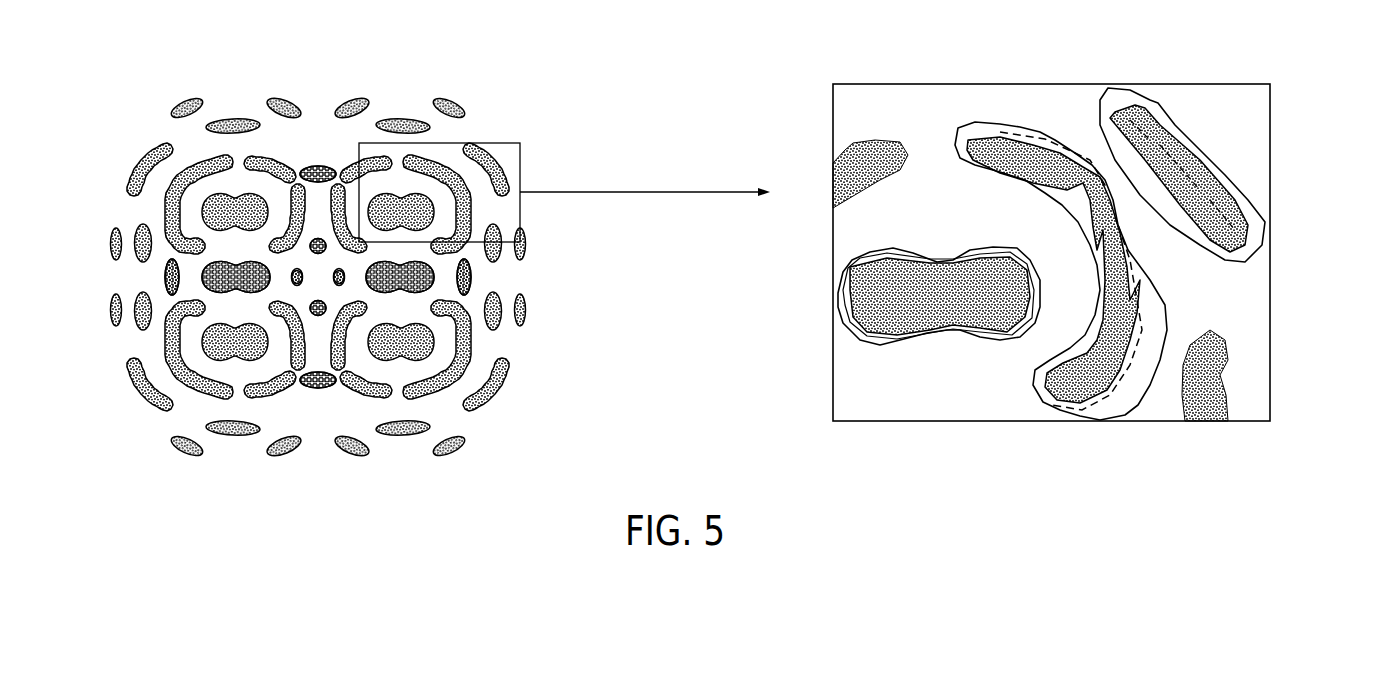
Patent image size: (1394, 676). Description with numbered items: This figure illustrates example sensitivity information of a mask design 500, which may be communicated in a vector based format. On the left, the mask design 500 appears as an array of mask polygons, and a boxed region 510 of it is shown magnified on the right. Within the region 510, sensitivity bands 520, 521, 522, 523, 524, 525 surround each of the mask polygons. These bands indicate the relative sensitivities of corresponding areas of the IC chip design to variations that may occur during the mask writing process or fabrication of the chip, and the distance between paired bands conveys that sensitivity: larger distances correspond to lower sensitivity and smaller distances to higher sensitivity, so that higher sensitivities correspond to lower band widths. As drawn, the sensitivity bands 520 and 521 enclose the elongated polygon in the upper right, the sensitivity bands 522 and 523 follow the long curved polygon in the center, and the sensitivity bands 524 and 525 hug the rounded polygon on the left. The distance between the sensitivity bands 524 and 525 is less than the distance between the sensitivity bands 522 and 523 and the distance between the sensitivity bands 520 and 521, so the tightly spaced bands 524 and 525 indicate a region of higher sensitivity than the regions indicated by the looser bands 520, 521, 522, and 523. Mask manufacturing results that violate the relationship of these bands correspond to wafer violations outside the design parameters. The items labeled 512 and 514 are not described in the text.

The mask design 500 is at (505, 58).
The region of the mask design 510 is at (1253, 143).
The background (non-pattern) region 512 is at (1207, 110).
The pattern feature with contours 514 is at (885, 360).
The sensitivity band 520 is at (1265, 205).
The sensitivity band 521 is at (1240, 230).
The sensitivity band 522 is at (1122, 398).
The sensitivity band 523 is at (1053, 400).
The sensitivity band 524 is at (853, 318).
The sensitivity band 525 is at (846, 262).